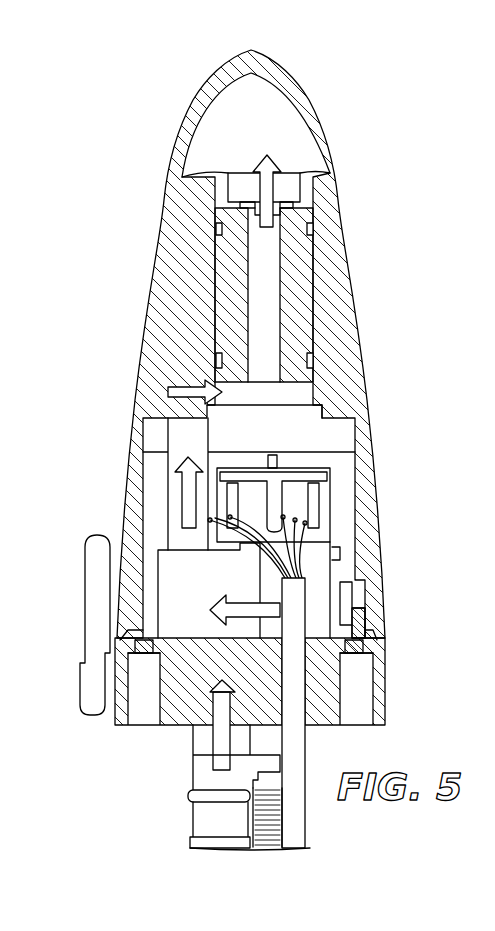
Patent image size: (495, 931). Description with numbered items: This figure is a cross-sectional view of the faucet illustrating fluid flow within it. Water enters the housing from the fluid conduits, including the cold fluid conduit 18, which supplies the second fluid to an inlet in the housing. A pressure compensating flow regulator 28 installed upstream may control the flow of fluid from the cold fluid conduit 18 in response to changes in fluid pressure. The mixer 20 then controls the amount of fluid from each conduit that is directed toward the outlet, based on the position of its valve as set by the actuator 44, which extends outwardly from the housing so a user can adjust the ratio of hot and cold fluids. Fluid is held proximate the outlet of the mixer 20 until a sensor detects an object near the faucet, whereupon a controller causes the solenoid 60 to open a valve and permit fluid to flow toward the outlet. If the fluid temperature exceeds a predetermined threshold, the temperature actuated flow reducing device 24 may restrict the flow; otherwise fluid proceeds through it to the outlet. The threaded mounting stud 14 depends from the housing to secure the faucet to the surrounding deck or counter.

The mounting stud 14 is at (288, 825).
The cold fluid conduit 18 is at (208, 815).
The mixer 20 is at (106, 729).
The temperature actuated flow reducing device 24 is at (307, 295).
The pressure compensating flow regulator 28 is at (300, 182).
The actuator 44 is at (95, 595).
The solenoid 60 is at (313, 503).